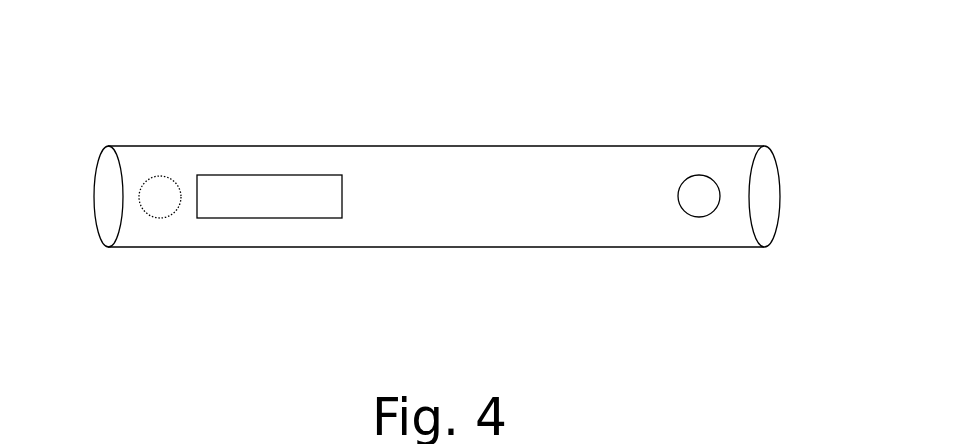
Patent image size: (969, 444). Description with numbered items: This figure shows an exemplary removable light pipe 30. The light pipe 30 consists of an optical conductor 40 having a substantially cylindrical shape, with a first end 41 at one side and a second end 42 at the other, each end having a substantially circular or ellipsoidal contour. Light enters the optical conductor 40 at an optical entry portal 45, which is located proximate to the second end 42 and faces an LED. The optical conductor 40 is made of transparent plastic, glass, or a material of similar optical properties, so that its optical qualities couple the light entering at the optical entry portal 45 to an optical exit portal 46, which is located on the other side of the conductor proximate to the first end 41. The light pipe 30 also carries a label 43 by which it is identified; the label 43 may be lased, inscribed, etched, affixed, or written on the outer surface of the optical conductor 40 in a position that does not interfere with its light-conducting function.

The removable light pipe 30 is at (211, 25).
The optical conductor 40 is at (203, 139).
The first end 41 is at (111, 214).
The second end 42 is at (766, 178).
The label 43 is at (343, 213).
The optical entry portal 45 is at (683, 184).
The optical exit portal 46 is at (175, 214).